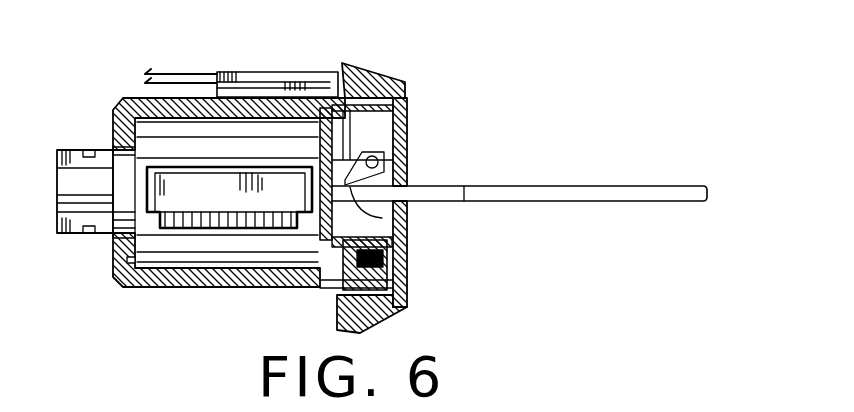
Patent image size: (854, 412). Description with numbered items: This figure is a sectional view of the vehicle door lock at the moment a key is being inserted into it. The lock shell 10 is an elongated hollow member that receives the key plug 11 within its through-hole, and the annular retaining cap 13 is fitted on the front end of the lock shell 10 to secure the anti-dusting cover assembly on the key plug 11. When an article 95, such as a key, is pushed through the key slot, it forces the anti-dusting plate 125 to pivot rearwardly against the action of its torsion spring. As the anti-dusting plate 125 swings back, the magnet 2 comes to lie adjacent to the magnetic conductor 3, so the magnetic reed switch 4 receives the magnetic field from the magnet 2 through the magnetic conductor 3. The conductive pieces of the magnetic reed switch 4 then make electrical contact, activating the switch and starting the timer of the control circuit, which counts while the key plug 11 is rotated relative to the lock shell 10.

The magnet 2 is at (410, 153).
The magnetic conductor 3 is at (408, 113).
The magnetic reed switch 4 is at (270, 73).
The lock shell 10 is at (190, 279).
The key plug 11 is at (240, 253).
The annular retaining cap 13 is at (408, 85).
The article 95 is at (487, 192).
The anti-dusting plate 125 is at (408, 220).